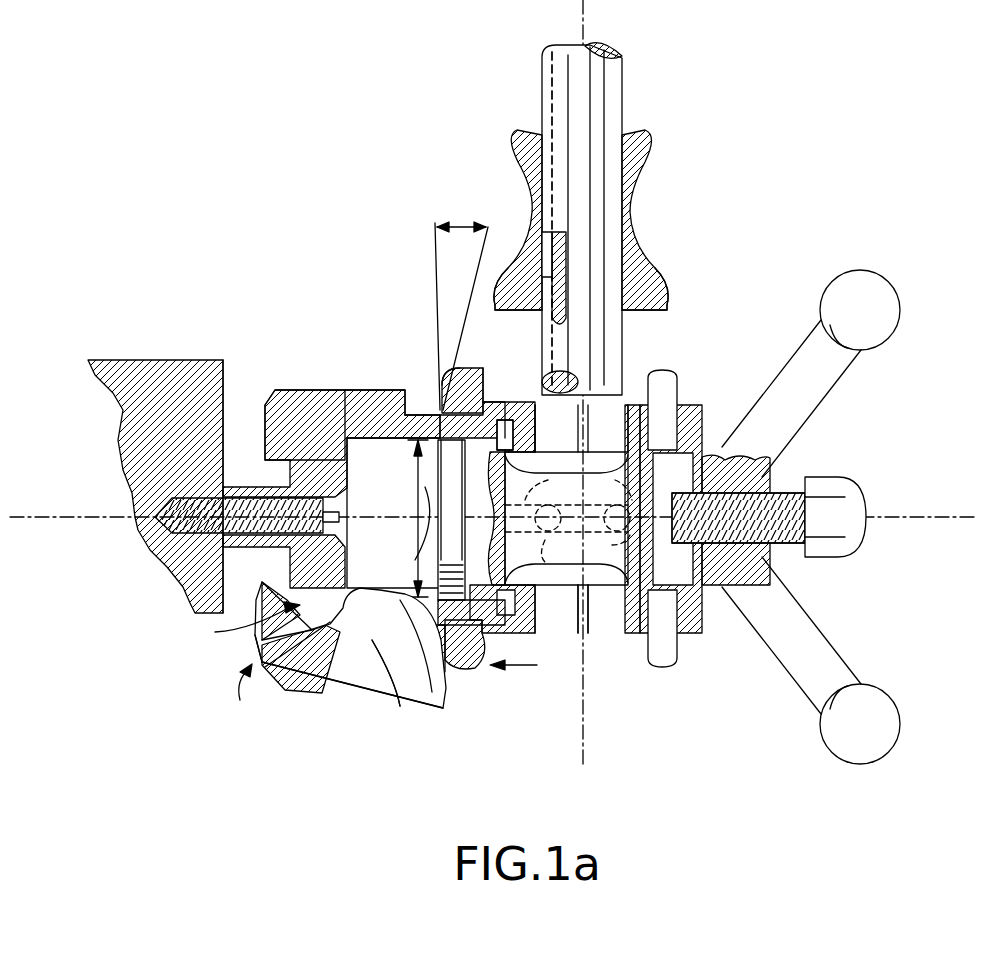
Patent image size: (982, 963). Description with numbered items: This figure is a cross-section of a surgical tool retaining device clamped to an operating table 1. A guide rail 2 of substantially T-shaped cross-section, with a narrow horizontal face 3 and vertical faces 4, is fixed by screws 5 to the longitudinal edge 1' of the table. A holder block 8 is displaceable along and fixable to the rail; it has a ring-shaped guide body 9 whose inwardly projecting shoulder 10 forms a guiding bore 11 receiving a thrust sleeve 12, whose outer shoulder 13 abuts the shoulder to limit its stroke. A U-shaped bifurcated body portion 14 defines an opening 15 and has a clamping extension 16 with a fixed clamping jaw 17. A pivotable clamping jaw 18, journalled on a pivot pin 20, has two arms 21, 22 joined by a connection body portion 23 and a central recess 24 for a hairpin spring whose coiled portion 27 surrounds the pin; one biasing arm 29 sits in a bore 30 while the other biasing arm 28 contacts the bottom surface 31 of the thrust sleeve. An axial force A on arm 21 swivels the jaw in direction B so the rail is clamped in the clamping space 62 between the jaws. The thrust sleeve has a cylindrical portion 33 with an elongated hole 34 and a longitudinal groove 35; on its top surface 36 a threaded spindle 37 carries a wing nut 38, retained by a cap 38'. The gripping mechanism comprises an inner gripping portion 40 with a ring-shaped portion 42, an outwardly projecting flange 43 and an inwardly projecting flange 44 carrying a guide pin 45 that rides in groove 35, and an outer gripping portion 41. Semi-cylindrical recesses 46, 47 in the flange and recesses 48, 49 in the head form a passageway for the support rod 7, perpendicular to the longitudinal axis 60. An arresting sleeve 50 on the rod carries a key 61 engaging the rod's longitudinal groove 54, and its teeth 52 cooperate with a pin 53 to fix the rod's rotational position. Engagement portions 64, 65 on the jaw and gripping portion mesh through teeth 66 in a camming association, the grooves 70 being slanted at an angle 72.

The operating table 1 is at (154, 453).
The longitudinal edge 1' is at (206, 451).
The guide rail 2 is at (245, 550).
The horizontal face 3 is at (318, 440).
The vertical faces 4 is at (282, 470).
The screws 5 is at (195, 535).
The support rod 7 is at (612, 82).
The holder block 8 is at (330, 305).
The guide body 9 is at (402, 412).
The inwardly projecting shoulder 10 is at (485, 652).
The guiding bore 11 is at (490, 400).
The thrust sleeve 12 is at (603, 590).
The outer shoulder 13 is at (480, 655).
The bifurcated body portion 14 is at (347, 388).
The opening 15 is at (415, 493).
The clamping extension 16 is at (375, 388).
The fixed clamping jaw 17 is at (265, 430).
The pivotable clamping jaw 18 is at (368, 594).
The pivot pin 20 is at (370, 640).
The arm 21 is at (428, 700).
The arm 22 is at (242, 614).
The connection body portion 23 is at (380, 705).
The recess 24 is at (323, 690).
The coiled portion 27 is at (398, 702).
The biasing arm 28 is at (425, 500).
The biasing arm 29 is at (325, 628).
The bore 30 is at (278, 670).
The bottom surface 31 is at (440, 380).
The cylindrical portion 33 is at (556, 590).
The elongated hole 34 is at (622, 540).
The longitudinal groove 35 is at (532, 500).
The top surface 36 is at (705, 600).
The threaded spindle 37 is at (790, 492).
The wing nut 38 is at (814, 373).
The cap 38' is at (860, 512).
The inner gripping portion 40 is at (524, 403).
The outer gripping portion 41 is at (645, 408).
The ring-shaped portion 42 is at (505, 420).
The outwardly projecting flange 43 is at (455, 372).
The inwardly projecting flange 44 is at (525, 630).
The guide pin 45 is at (618, 505).
The recess 46 is at (575, 640).
The recess 47 is at (557, 400).
The recess 48 is at (596, 400).
The recess 49 is at (597, 630).
The arresting sleeve 50 is at (648, 140).
The teeth 52 is at (660, 292).
The pin 53 is at (665, 378).
The longitudinal groove 54 is at (545, 90).
The longitudinal axis 60 is at (872, 548).
The key 61 is at (520, 305).
The clamping space 62 is at (262, 632).
The engagement portion 64 is at (425, 690).
The engagement portion 65 is at (445, 410).
The teeth 66 is at (432, 412).
The grooves 70 is at (465, 368).
The angle 72 is at (455, 222).
The axial force A is at (522, 668).
The direction B is at (240, 700).